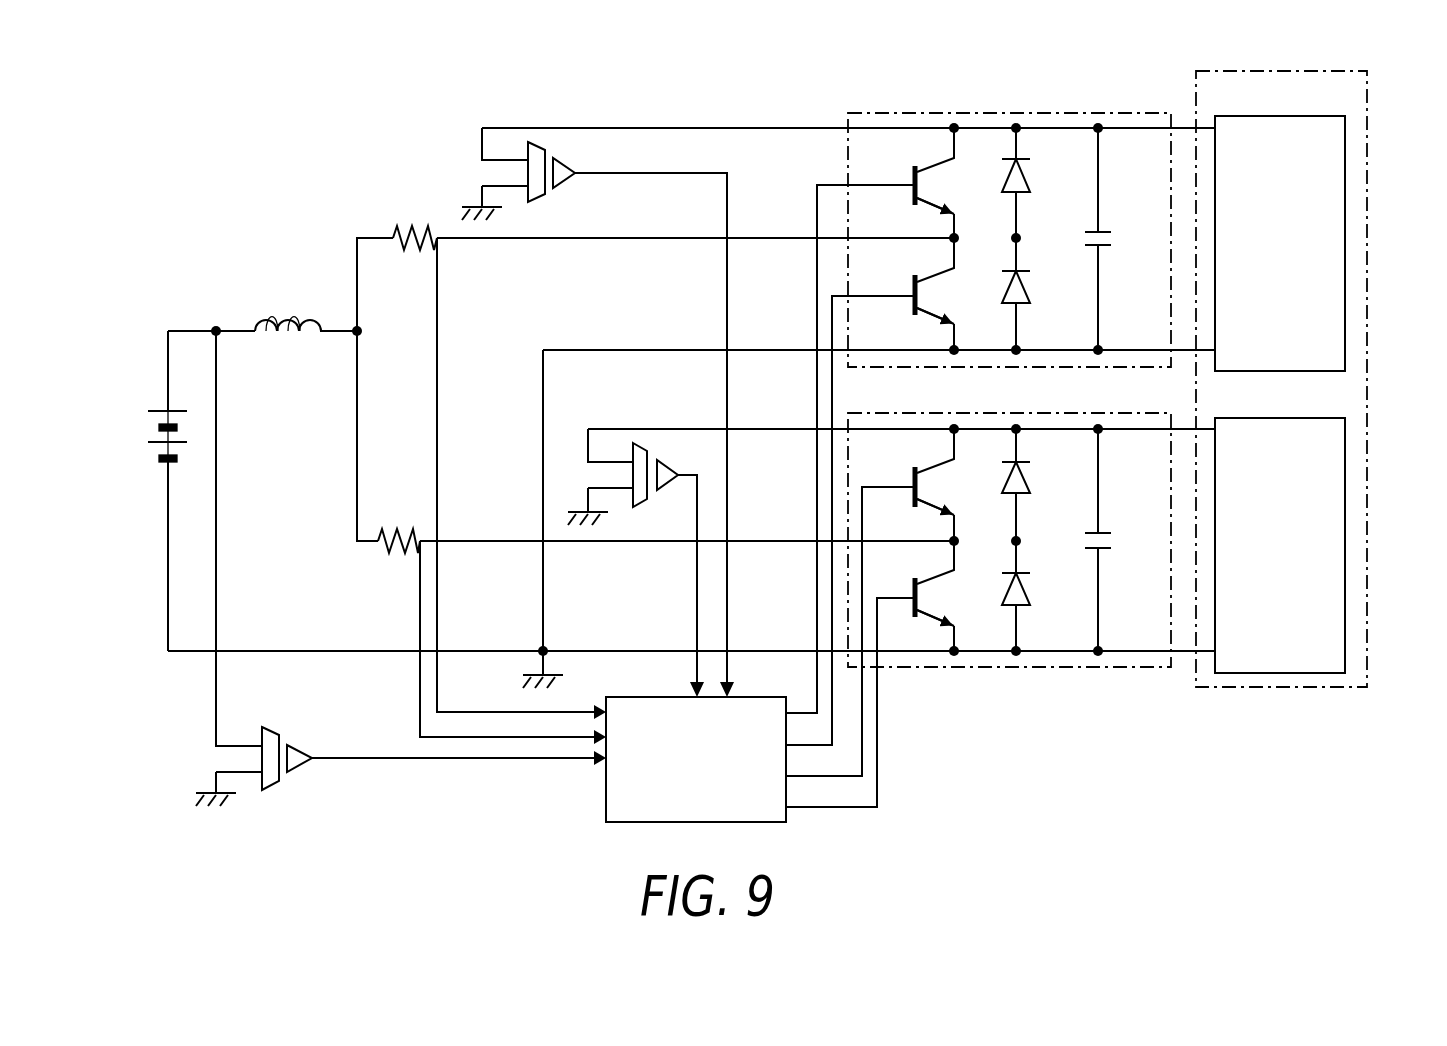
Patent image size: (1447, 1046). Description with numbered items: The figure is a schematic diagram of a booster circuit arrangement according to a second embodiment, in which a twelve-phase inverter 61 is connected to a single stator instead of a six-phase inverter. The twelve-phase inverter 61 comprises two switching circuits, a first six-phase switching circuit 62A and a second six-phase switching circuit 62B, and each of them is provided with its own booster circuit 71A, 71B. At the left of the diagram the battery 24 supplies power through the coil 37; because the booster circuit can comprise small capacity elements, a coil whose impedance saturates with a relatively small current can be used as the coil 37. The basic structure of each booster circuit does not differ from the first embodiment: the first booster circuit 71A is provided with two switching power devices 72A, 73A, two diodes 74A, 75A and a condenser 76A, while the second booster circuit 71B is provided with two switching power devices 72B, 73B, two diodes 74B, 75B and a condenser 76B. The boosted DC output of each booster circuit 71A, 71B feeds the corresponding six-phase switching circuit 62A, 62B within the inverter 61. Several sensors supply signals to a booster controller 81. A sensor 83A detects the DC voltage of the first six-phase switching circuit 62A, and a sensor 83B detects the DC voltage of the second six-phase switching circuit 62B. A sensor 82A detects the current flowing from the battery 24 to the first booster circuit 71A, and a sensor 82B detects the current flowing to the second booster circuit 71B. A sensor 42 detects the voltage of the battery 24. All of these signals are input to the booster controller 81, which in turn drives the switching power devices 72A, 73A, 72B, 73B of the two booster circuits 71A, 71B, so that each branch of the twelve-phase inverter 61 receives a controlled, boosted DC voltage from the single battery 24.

The battery 24 is at (143, 437).
The coil 37 is at (288, 310).
The sensor 42 is at (288, 731).
The 12-phase inverter 61 is at (1357, 100).
The first 6-phase switching circuit 62A is at (1250, 130).
The second 6-phase switching circuit 62B is at (1250, 432).
The booster circuit 71A is at (1030, 117).
The booster circuit 71B is at (1030, 420).
The switching power device 72A is at (943, 178).
The switching power device 72B is at (943, 480).
The switching power device 73A is at (943, 290).
The switching power device 73B is at (943, 593).
The diode 74A is at (1035, 185).
The diode 74B is at (1035, 487).
The diode 75A is at (1035, 290).
The diode 75B is at (1035, 592).
The condenser 76A is at (1118, 237).
The condenser 76B is at (1118, 540).
The booster controller 81 is at (625, 806).
The sensor 82A is at (396, 208).
The sensor 82B is at (399, 505).
The sensor 83A is at (560, 190).
The sensor 83B is at (667, 462).